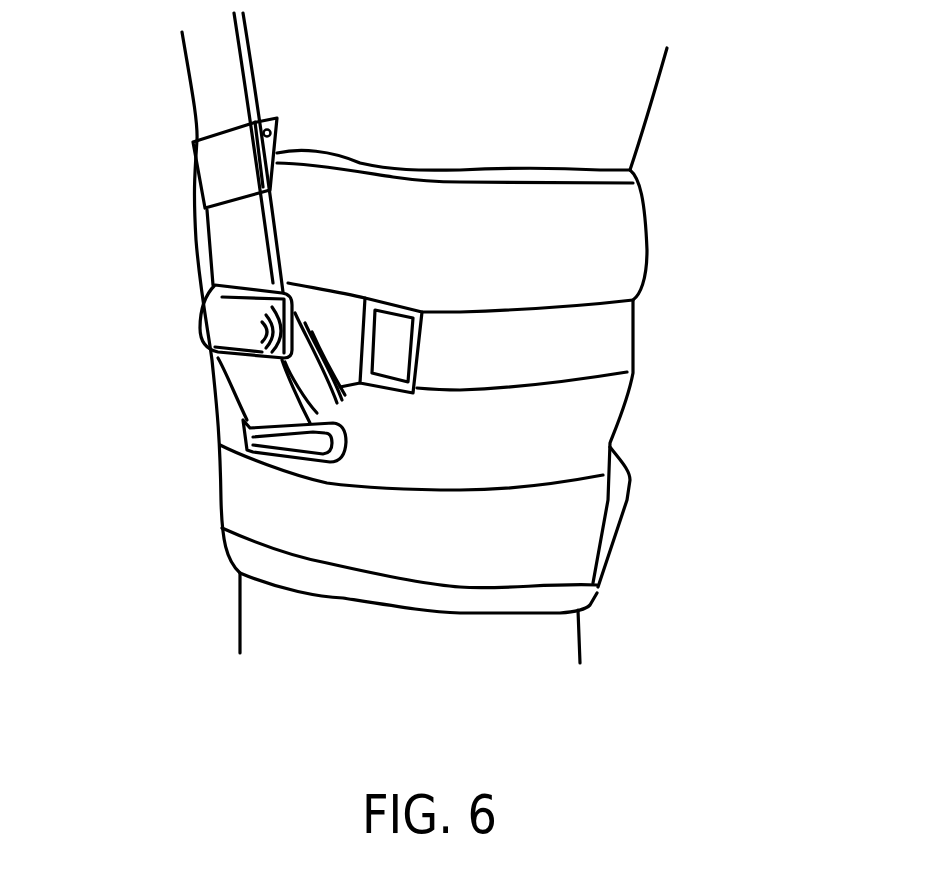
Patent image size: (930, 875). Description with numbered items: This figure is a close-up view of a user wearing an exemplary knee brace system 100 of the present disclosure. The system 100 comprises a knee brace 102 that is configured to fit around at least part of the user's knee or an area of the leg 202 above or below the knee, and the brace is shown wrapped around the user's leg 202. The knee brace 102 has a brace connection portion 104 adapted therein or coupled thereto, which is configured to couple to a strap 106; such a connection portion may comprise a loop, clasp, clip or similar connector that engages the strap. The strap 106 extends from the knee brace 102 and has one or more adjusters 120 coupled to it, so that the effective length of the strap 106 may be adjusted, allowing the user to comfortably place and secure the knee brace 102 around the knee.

The system 100 is at (655, 422).
The knee brace 102 is at (603, 248).
The brace connection portion 104 is at (243, 437).
The strap 106 is at (243, 253).
The adjuster 120 is at (223, 167).
The leg 202 is at (617, 113).